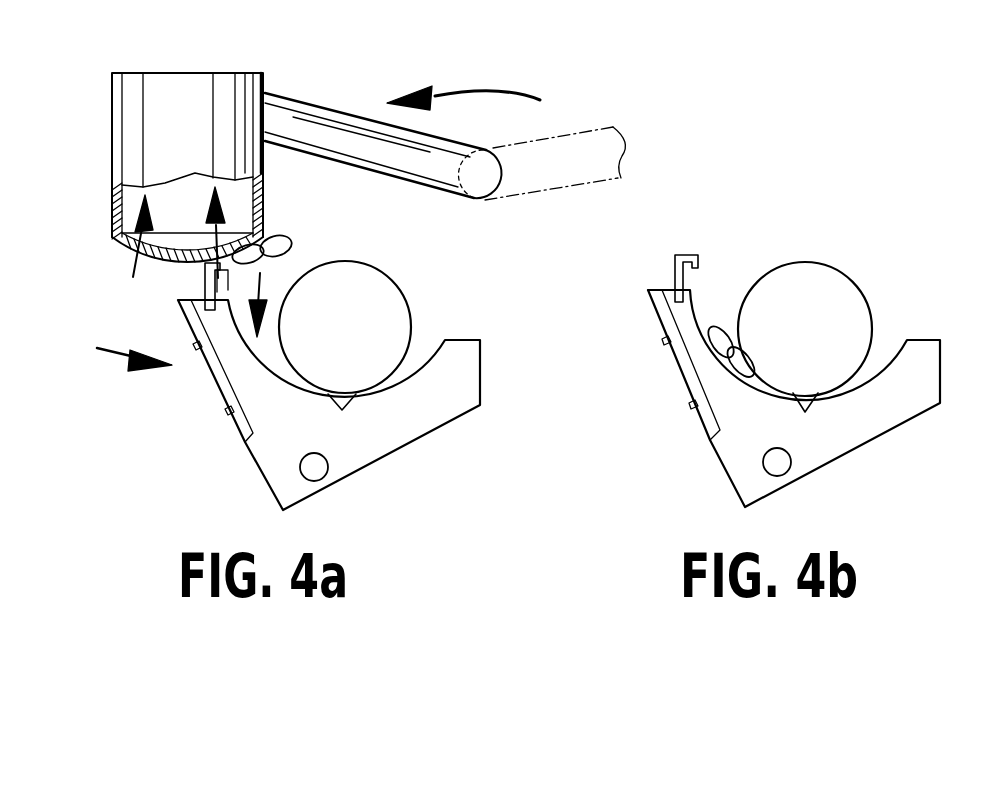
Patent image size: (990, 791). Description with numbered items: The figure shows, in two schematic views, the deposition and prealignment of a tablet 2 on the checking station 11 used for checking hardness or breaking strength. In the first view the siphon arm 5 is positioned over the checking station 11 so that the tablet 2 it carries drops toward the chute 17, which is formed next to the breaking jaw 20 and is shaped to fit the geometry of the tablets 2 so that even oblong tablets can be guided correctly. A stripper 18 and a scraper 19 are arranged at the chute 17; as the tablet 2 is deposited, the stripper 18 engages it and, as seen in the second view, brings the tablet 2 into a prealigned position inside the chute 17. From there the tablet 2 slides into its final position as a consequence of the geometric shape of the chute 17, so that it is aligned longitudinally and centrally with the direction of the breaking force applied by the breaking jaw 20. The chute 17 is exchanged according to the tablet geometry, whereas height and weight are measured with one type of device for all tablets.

In FIG. 4a, the tablet 2 is at (283, 244).
In FIG. 4b, the tablet 2 is at (722, 338).
In FIG. 4a, the siphon arm 5 is at (181, 92).
In FIG. 4a, the checking station 11 is at (116, 352).
In FIG. 4a, the chute 17 is at (425, 418).
In FIG. 4b, the chute 17 is at (878, 423).
In FIG. 4a, the stripper 18 is at (205, 279).
In FIG. 4b, the stripper 18 is at (675, 273).
In FIG. 4a, the scraper 19 is at (222, 387).
In FIG. 4b, the scraper 19 is at (682, 368).
In FIG. 4a, the breaking jaw 20 is at (395, 317).
In FIG. 4b, the breaking jaw 20 is at (853, 308).